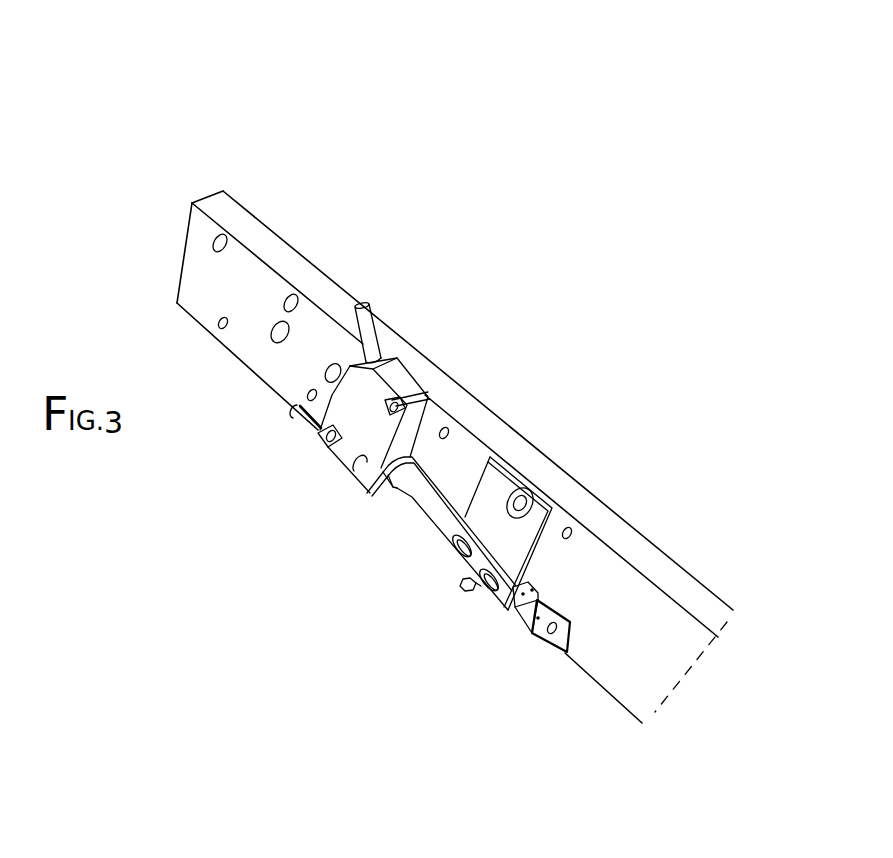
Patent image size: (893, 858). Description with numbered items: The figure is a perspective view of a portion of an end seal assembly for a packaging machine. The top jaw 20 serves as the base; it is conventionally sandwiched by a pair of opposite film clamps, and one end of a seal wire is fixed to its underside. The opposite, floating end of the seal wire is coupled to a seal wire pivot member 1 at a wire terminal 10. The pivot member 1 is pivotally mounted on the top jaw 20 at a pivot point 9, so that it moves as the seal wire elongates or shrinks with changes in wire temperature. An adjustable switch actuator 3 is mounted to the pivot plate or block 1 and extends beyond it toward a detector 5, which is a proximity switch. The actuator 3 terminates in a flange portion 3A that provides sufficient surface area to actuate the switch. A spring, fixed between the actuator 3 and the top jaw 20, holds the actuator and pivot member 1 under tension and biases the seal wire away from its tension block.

The top jaw 20 is at (252, 229).
The detector 5 is at (398, 378).
The seal wire pivot member 1 is at (524, 533).
The adjustable switch actuator 3 is at (508, 459).
The flange portion 3A is at (398, 490).
The wire terminal 10 is at (458, 592).
The pivot point 9 is at (530, 632).